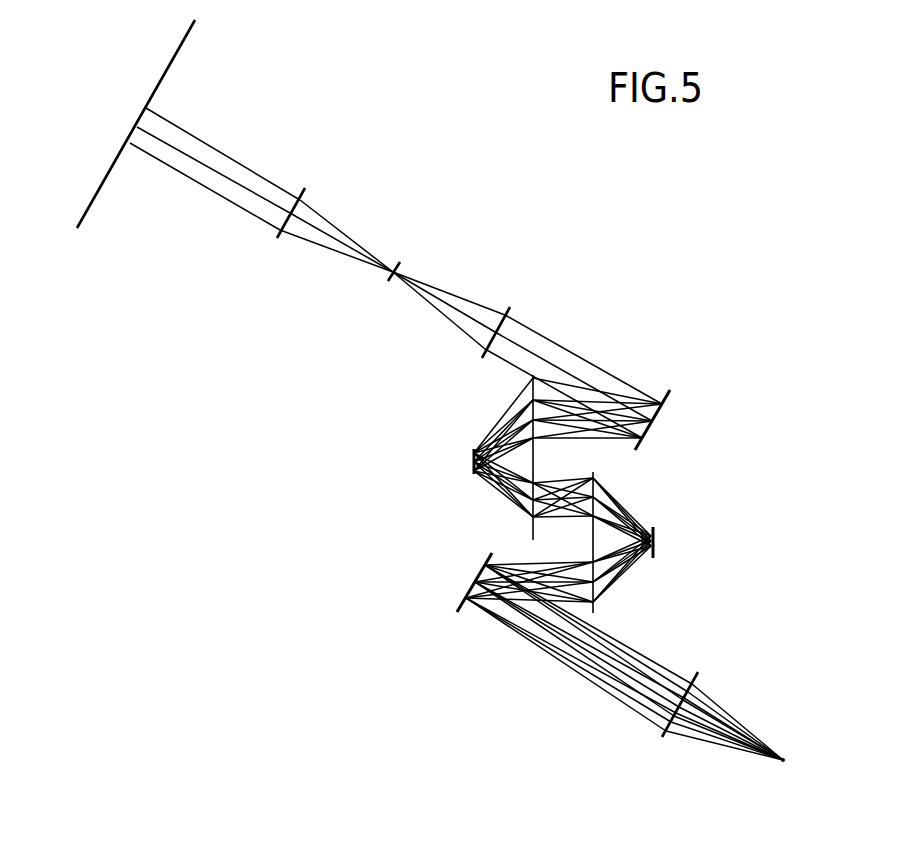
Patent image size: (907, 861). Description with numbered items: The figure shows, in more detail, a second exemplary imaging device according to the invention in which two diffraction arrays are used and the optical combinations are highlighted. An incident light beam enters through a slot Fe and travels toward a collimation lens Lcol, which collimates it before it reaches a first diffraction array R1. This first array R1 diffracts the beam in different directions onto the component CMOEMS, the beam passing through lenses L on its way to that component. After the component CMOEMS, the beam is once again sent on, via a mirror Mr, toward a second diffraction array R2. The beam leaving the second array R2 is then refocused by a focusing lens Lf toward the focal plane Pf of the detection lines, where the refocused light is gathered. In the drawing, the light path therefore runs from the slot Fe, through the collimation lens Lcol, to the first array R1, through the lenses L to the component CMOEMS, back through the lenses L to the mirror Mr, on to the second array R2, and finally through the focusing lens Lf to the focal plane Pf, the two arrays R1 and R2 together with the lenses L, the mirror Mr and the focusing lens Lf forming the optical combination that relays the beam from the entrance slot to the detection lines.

The slot Fe is at (393, 272).
The collimation lens Lcol is at (513, 312).
The first diffraction array R1 is at (667, 402).
The lenses L is at (533, 448).
The MOEMS component CMOEMS is at (473, 455).
The mirror Mr is at (655, 535).
The second diffraction array R2 is at (460, 588).
The focusing lens Lf is at (661, 731).
The focal plane Pf is at (790, 763).